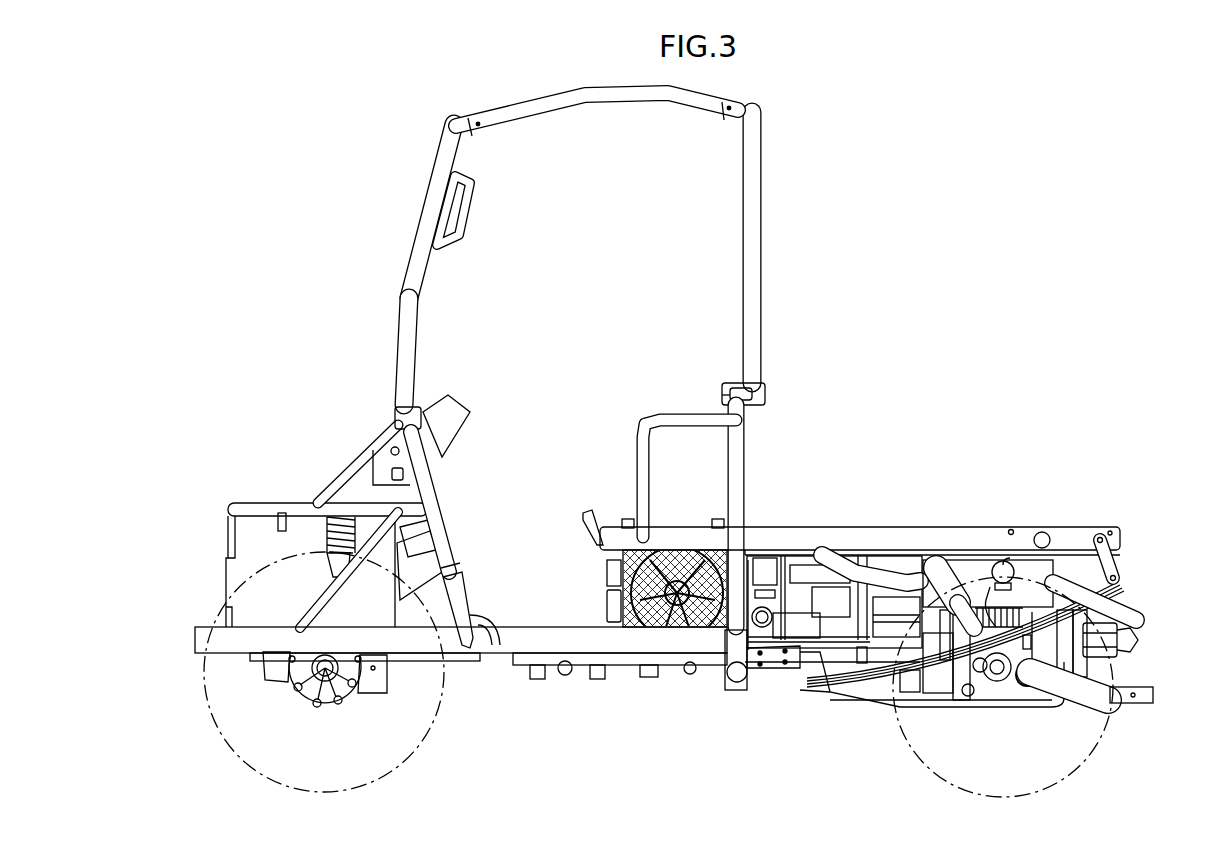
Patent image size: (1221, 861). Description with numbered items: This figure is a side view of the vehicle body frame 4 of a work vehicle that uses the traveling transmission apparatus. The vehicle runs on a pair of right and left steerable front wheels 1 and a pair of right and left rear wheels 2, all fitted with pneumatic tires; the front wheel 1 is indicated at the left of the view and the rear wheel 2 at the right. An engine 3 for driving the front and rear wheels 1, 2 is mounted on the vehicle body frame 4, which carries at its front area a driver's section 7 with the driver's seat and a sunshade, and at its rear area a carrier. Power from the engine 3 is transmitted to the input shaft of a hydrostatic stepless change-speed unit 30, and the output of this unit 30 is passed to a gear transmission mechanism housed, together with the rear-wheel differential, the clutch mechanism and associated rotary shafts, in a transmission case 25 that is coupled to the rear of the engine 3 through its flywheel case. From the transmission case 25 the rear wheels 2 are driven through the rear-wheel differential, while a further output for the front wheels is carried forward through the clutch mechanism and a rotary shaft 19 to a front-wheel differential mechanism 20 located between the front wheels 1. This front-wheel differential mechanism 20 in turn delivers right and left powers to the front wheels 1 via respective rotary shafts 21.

The front wheels 1 is at (222, 735).
The rear wheels 2 is at (1095, 745).
The engine 3 is at (790, 613).
The vehicle body frame 4 is at (866, 538).
The driver's section 7 is at (455, 318).
The rotary shaft 19 is at (462, 657).
The front-wheel differential mechanism 20 is at (330, 702).
The rotary shafts 21 is at (327, 660).
The transmission case 25 is at (942, 677).
The hydrostatic stepless change-speed unit 30 is at (1100, 637).